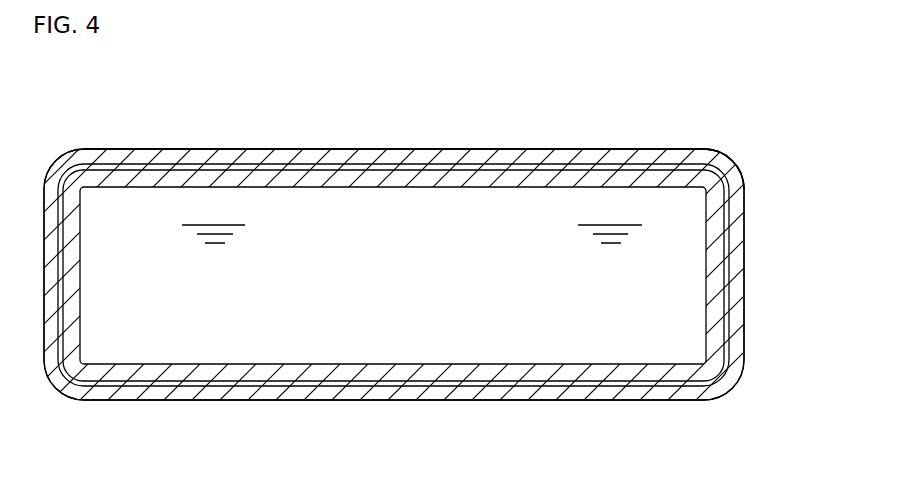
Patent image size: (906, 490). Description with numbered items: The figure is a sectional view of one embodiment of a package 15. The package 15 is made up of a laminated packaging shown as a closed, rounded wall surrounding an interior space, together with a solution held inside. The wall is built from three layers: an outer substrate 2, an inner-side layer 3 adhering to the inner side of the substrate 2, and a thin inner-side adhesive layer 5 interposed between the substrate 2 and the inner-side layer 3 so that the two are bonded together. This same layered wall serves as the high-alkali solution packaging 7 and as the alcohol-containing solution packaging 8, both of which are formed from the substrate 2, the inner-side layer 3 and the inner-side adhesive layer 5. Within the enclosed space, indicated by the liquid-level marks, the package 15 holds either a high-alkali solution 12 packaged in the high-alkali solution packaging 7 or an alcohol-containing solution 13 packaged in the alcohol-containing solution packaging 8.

The substrate 2 is at (430, 150).
The inner-side layer 3 is at (263, 165).
The inner-side adhesive layer 5 is at (345, 168).
The high-alkali solution packaging 7 is at (600, 146).
The alcohol-containing solution packaging 8 is at (414, 137).
The high-alkali solution 12 is at (260, 342).
The alcohol-containing solution 13 is at (443, 344).
The package 15 is at (400, 482).